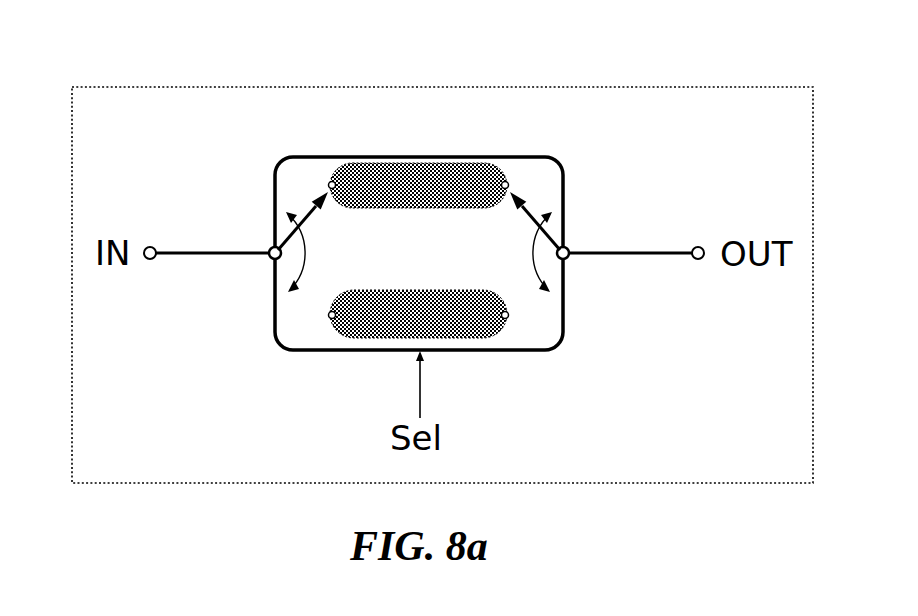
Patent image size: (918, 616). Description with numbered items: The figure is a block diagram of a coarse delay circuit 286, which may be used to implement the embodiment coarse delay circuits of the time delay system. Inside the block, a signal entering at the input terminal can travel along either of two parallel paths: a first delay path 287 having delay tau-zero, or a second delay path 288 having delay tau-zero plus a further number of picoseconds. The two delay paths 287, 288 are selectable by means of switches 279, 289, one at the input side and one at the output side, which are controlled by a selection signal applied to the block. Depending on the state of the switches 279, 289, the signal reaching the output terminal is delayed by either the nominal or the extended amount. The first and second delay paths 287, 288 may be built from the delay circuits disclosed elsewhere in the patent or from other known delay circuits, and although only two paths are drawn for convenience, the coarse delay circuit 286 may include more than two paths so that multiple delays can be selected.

The coarse delay circuit 286 is at (77, 64).
The switch 279 is at (305, 245).
The first delay path 287 is at (385, 209).
The second delay path 288 is at (455, 290).
The switch 289 is at (528, 214).